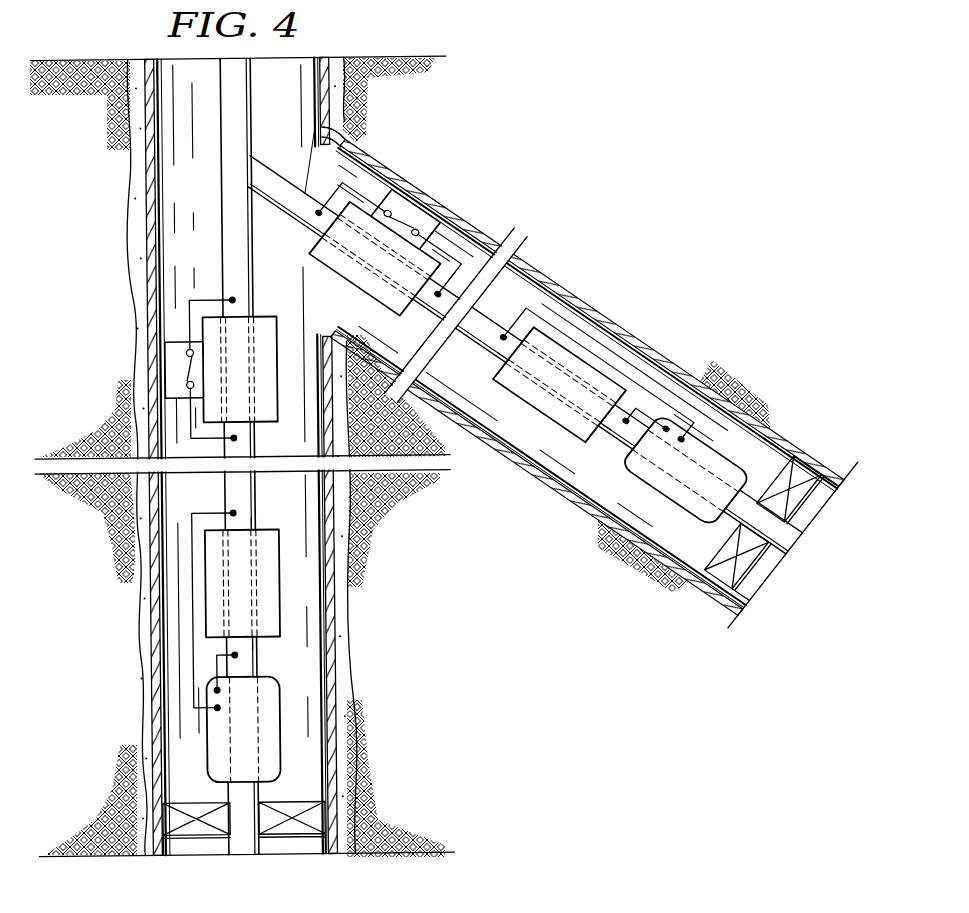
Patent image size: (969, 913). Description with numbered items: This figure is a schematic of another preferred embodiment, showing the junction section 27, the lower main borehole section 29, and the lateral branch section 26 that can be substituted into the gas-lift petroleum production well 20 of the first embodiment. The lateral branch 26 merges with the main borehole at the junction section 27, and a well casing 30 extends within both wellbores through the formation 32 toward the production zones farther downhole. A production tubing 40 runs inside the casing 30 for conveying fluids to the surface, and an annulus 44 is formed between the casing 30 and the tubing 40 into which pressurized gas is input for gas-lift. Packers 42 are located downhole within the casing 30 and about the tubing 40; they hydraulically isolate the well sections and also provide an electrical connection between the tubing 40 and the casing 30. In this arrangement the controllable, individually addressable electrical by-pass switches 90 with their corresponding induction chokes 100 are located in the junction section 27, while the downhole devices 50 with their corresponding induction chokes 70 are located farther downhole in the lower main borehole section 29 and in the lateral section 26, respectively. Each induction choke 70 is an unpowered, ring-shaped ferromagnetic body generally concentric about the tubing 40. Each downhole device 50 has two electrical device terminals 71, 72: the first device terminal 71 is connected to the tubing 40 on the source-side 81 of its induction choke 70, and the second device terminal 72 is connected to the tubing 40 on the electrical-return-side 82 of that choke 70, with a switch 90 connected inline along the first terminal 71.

The petroleum production well 20 is at (572, 137).
The lateral branch section 26 is at (662, 300).
The junction section 27 is at (425, 145).
The lower main borehole section 29 is at (408, 618).
The well casing 30 is at (150, 258).
The formation 32 is at (96, 218).
The production tubing 40 is at (220, 259).
The packer 42 is at (192, 801).
The annulus 44 is at (200, 198).
The downhole device 50 is at (207, 741).
The induction choke 70 is at (205, 607).
The first device terminal 71 is at (192, 550).
The second device terminal 72 is at (218, 673).
The source-side 81 is at (258, 523).
The electrical-return-side 82 is at (258, 645).
The electrical by-pass switch 90 is at (165, 367).
The induction choke 100 is at (266, 318).